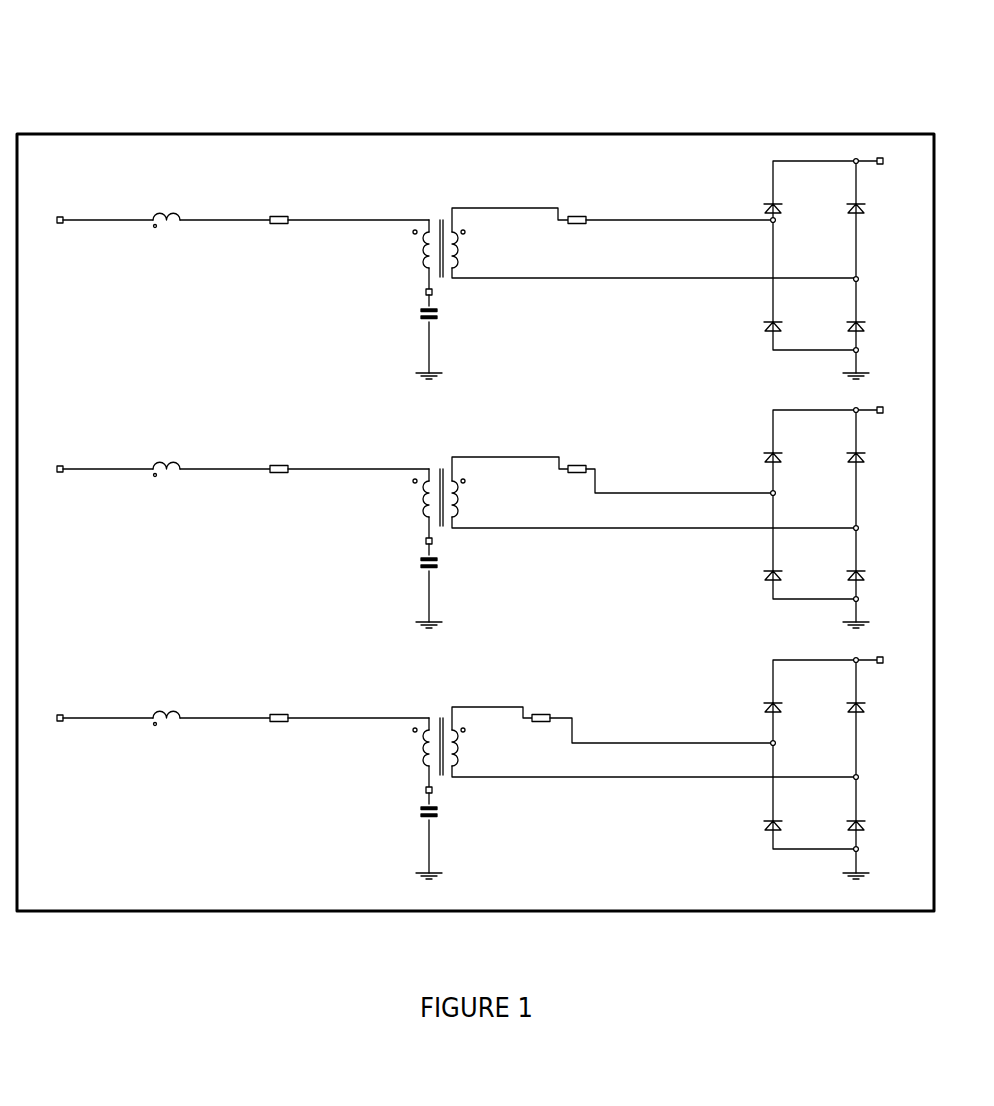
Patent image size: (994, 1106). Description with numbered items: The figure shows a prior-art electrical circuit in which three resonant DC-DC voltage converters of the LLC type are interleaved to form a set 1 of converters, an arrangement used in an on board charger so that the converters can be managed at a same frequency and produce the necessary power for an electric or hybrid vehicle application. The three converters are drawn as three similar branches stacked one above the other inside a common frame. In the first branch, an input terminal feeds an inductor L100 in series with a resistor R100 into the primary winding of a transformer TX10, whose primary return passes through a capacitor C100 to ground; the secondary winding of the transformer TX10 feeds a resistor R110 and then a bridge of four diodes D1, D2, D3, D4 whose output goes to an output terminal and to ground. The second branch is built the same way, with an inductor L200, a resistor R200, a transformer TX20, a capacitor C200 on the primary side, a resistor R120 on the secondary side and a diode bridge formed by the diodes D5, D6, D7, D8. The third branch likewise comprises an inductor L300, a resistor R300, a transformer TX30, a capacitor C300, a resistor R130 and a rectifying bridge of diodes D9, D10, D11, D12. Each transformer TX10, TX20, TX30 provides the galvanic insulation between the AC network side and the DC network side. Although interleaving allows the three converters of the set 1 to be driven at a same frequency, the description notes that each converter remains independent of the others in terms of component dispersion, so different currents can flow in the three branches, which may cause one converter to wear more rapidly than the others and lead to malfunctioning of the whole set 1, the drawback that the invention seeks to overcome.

The set of converters 1 is at (196, 78).
The inductor L100 is at (166, 215).
The resistor R100 is at (280, 213).
The transformer TX10 is at (626, 250).
The resistor R110 is at (576, 231).
The capacitor C100 is at (442, 334).
The diode D1 is at (847, 209).
The diode D2 is at (847, 327).
The diode D3 is at (763, 327).
The diode D4 is at (763, 209).
The inductor L200 is at (166, 464).
The resistor R200 is at (280, 462).
The transformer TX20 is at (626, 499).
The resistor R120 is at (576, 479).
The capacitor C200 is at (442, 583).
The diode D5 is at (847, 458).
The diode D6 is at (763, 458).
The diode D7 is at (763, 576).
The diode D8 is at (847, 576).
The inductor L300 is at (166, 713).
The resistor R300 is at (280, 711).
The transformer TX30 is at (626, 748).
The resistor R130 is at (542, 728).
The capacitor C300 is at (442, 833).
The diode D9 is at (763, 826).
The diode D10 is at (761, 708).
The diode D11 is at (845, 708).
The diode D12 is at (845, 826).